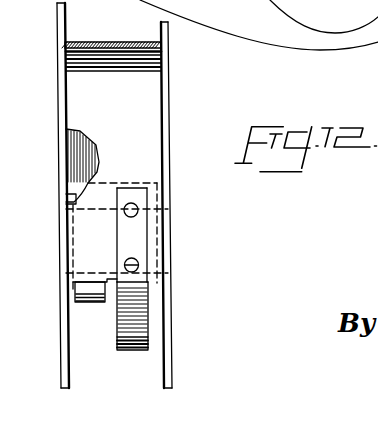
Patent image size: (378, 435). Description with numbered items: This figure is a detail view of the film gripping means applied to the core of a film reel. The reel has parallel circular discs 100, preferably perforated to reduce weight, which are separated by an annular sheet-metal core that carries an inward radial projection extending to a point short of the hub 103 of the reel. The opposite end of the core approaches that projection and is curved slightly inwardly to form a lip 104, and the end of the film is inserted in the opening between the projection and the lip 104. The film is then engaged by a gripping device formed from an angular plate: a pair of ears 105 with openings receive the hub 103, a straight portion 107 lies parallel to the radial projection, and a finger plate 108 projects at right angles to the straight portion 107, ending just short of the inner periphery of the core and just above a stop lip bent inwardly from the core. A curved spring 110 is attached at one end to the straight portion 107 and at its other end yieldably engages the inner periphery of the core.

The circular discs 100 is at (58, 85).
The hub 103 is at (88, 247).
The lip 104 is at (112, 43).
The ears 105 is at (67, 200).
The straight portion 107 is at (78, 171).
The finger plate 108 is at (105, 289).
The curved spring 110 is at (117, 345).